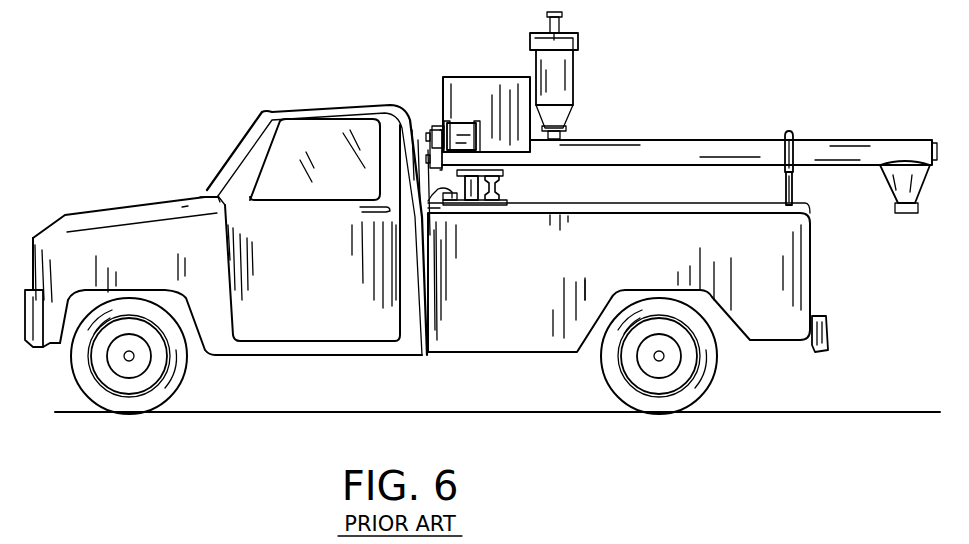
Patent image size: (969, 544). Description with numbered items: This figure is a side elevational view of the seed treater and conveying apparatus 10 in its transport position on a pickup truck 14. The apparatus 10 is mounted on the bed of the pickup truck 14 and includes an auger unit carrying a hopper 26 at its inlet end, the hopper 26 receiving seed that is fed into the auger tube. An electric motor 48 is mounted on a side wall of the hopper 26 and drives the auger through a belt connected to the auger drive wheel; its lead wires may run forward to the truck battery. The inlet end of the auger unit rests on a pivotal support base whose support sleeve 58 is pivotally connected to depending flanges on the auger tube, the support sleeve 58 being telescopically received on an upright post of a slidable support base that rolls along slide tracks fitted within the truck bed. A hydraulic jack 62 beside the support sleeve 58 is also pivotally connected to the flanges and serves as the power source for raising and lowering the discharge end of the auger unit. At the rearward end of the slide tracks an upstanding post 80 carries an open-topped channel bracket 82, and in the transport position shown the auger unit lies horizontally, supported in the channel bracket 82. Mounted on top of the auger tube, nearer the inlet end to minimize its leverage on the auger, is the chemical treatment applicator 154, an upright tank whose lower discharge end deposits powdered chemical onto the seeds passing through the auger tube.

The pickup truck 14 is at (147, 210).
The seed treater and conveying apparatus 10 is at (618, 90).
The hopper 26 is at (497, 85).
The electric motor 48 is at (460, 127).
The chemical treatment applicator 154 is at (580, 73).
The support sleeve 58 is at (477, 203).
The hydraulic jack 62 is at (501, 190).
The channel bracket 82 is at (793, 152).
The upstanding post 80 is at (794, 186).